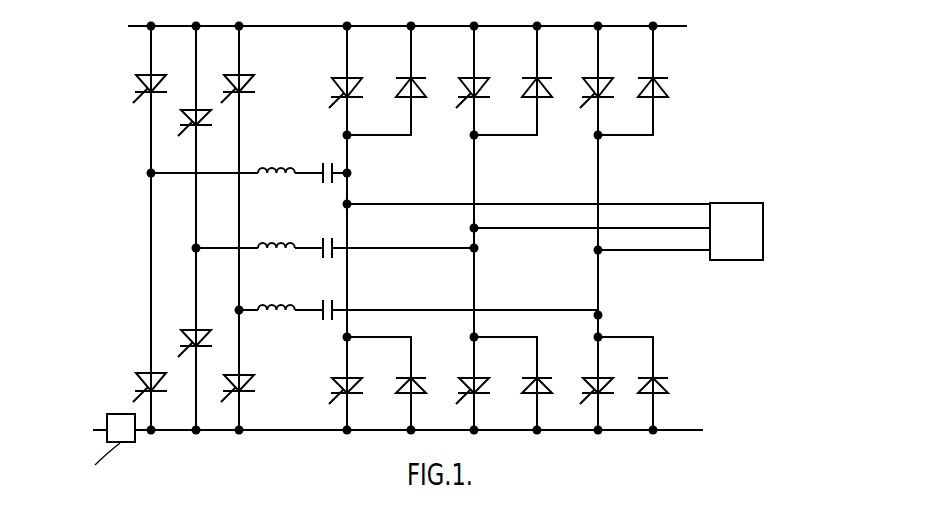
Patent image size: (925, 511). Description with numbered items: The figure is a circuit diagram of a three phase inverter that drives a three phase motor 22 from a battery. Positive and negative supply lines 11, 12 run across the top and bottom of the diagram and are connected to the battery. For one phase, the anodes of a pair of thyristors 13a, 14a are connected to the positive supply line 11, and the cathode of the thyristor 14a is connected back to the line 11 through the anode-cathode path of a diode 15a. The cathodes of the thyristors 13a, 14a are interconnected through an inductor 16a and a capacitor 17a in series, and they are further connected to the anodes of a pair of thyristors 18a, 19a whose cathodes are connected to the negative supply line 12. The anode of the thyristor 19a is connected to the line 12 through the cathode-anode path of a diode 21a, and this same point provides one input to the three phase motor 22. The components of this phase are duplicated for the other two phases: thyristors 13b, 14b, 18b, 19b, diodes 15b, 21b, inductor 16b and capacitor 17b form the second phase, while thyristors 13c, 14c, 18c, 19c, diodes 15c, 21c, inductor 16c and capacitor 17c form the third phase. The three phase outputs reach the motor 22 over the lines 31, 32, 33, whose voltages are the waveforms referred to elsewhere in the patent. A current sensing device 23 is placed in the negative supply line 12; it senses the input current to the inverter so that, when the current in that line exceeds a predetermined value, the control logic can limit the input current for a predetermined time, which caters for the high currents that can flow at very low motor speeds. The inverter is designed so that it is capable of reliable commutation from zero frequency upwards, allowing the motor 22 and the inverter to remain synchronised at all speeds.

The positive supply line 11 is at (298, 25).
The negative supply line 12 is at (304, 433).
The thyristor 13a is at (183, 124).
The thyristor 13b is at (226, 85).
The thyristor 13c is at (137, 81).
The thyristor 14a is at (458, 88).
The thyristor 14b is at (580, 88).
The thyristor 14c is at (330, 88).
The diode 15a is at (520, 88).
The diode 15b is at (637, 88).
The diode 15c is at (394, 88).
The inductor 16a is at (250, 245).
The inductor 16b is at (250, 307).
The inductor 16c is at (250, 170).
The capacitor 17a is at (316, 241).
The capacitor 17b is at (316, 305).
The capacitor 17c is at (316, 166).
The thyristor 18a is at (181, 334).
The thyristor 18b is at (250, 387).
The thyristor 18c is at (136, 386).
The thyristor 19a is at (485, 388).
The thyristor 19b is at (608, 388).
The thyristor 19c is at (358, 388).
The diode 21a is at (548, 385).
The diode 21b is at (664, 385).
The diode 21c is at (422, 385).
The three phase motor 22 is at (726, 203).
The current sensing device 23 is at (137, 437).
The line 31 is at (660, 206).
The line 32 is at (618, 228).
The line 33 is at (663, 252).